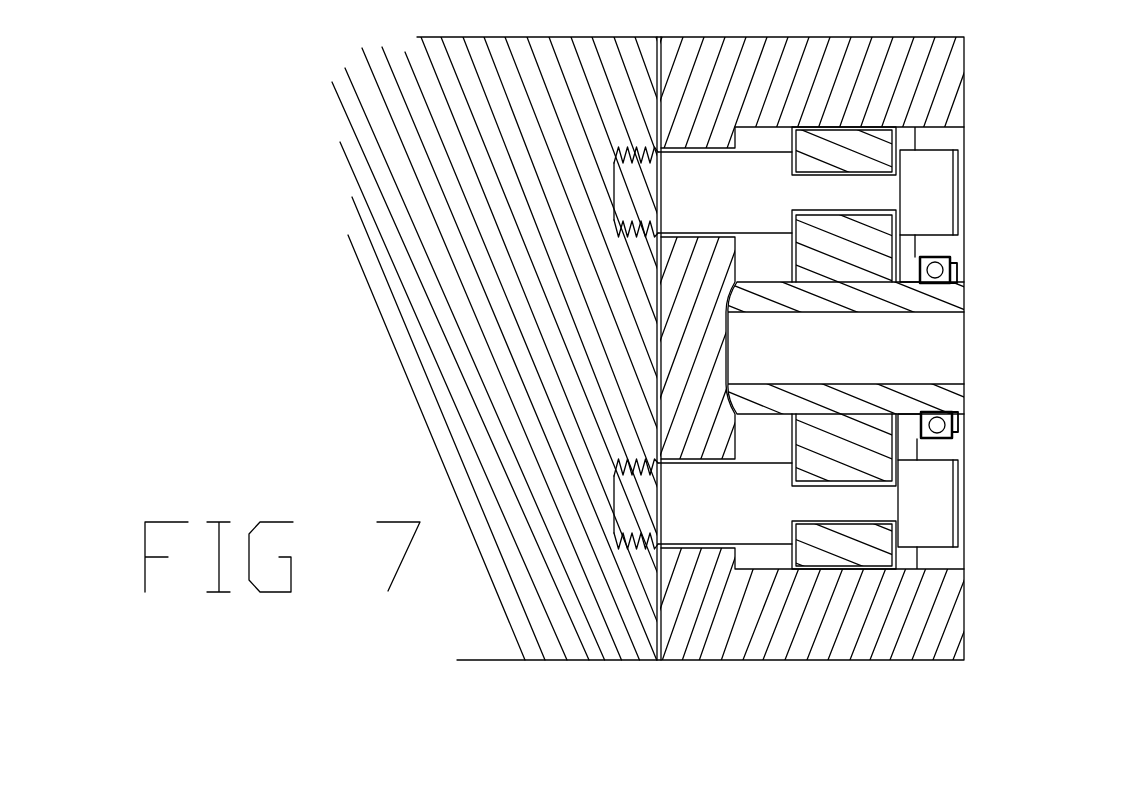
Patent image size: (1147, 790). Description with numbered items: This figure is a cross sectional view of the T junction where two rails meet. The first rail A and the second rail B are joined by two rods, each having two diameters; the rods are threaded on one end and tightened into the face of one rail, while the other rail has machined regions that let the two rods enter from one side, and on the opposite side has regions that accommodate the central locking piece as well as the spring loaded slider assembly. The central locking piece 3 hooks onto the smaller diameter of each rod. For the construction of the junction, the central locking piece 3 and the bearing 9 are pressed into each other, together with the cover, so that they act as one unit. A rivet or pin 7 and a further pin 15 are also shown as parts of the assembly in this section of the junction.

The central locking piece 3 is at (845, 353).
The rivet or pin 7 is at (927, 200).
The bearing 9 is at (960, 283).
The pin 15 is at (957, 446).
The rail A is at (615, 632).
The rail B is at (723, 625).